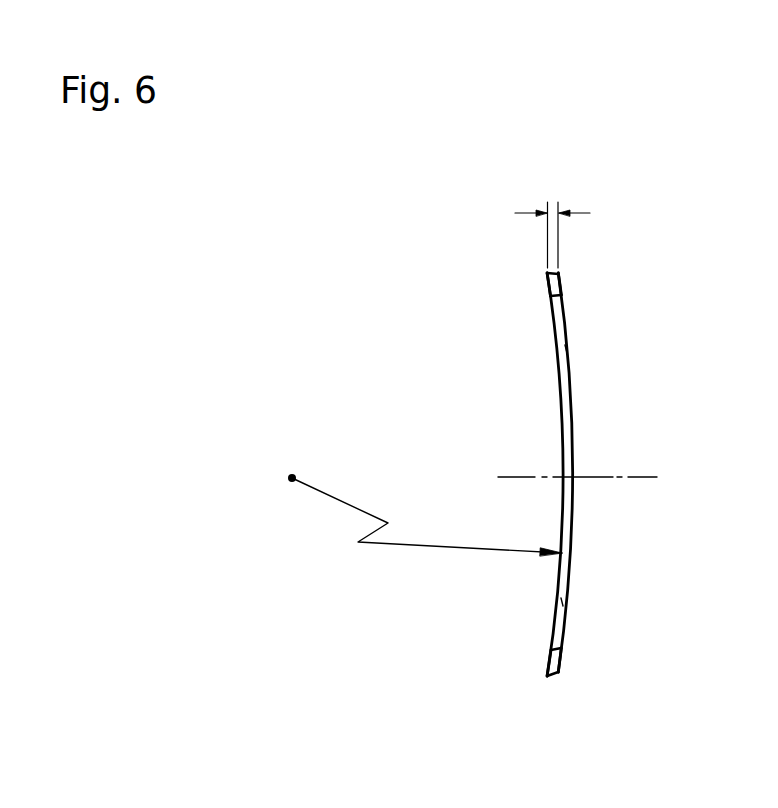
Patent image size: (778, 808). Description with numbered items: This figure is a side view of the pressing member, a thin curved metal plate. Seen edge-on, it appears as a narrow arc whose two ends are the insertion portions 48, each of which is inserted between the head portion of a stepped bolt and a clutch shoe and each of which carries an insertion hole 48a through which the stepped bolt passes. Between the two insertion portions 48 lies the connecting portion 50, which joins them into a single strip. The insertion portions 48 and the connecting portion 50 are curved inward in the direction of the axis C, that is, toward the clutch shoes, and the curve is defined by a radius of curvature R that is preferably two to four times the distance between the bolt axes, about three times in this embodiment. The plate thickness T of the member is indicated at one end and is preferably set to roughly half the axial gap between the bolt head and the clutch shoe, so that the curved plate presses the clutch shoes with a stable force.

The insertion portion 48 is at (548, 277).
The insertion hole 48a is at (567, 342).
The connecting portion 50 is at (574, 413).
The plate thickness T is at (552, 220).
The axis C is at (528, 477).
The radius of curvature R is at (425, 532).